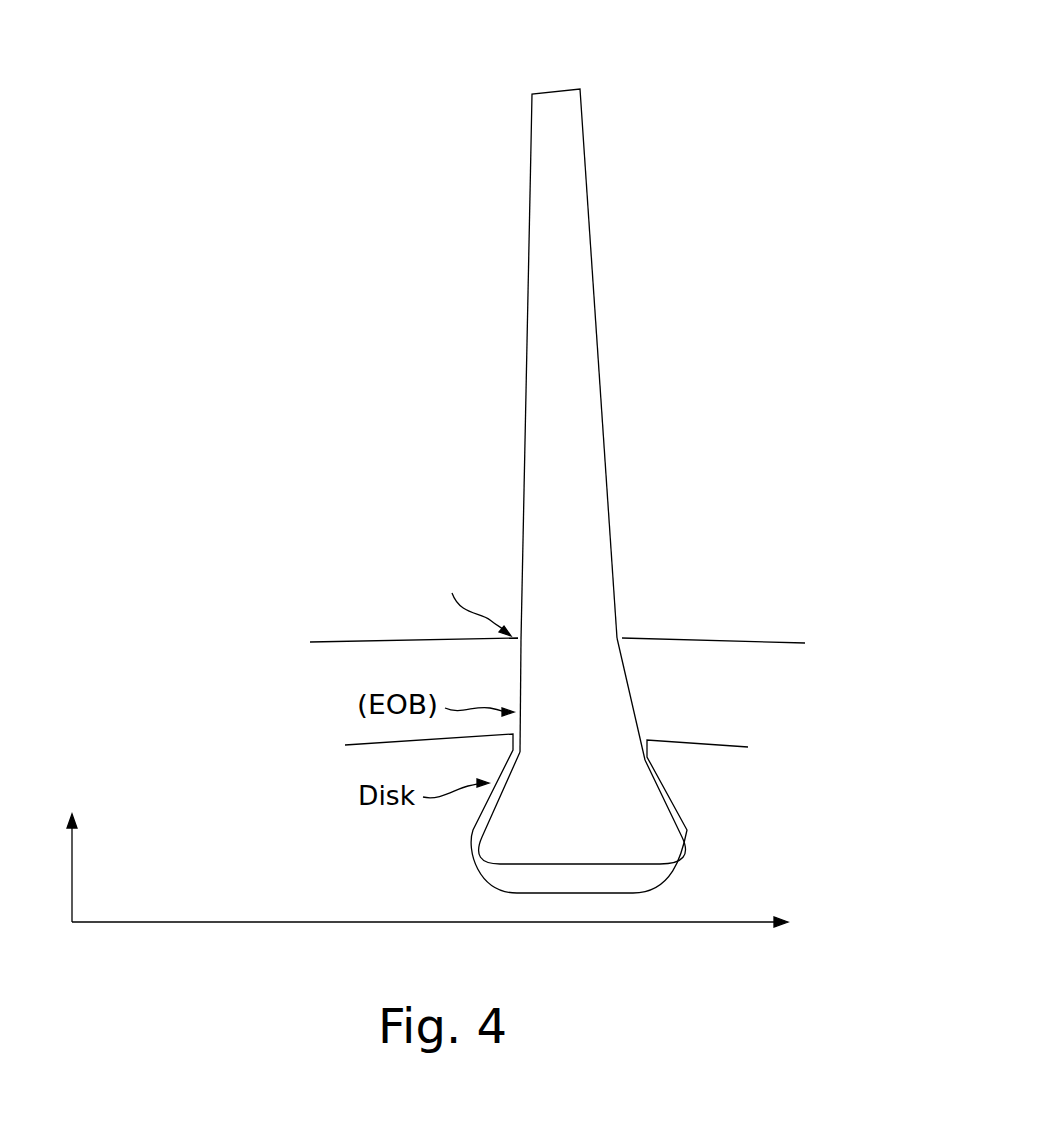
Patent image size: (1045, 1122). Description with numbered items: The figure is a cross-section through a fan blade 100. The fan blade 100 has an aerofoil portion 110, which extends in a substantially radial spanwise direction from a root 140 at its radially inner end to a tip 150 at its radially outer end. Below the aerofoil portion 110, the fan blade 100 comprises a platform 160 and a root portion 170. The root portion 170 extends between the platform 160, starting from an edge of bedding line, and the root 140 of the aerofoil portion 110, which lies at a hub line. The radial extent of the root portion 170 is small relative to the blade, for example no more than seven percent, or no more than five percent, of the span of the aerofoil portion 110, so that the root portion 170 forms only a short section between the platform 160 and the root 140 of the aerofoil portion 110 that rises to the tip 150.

The fan blade 100 is at (617, 83).
The aerofoil portion 110 is at (553, 487).
The root 140 is at (622, 638).
The tip 150 is at (528, 140).
The platform 160 is at (610, 695).
The root portion 170 is at (655, 847).